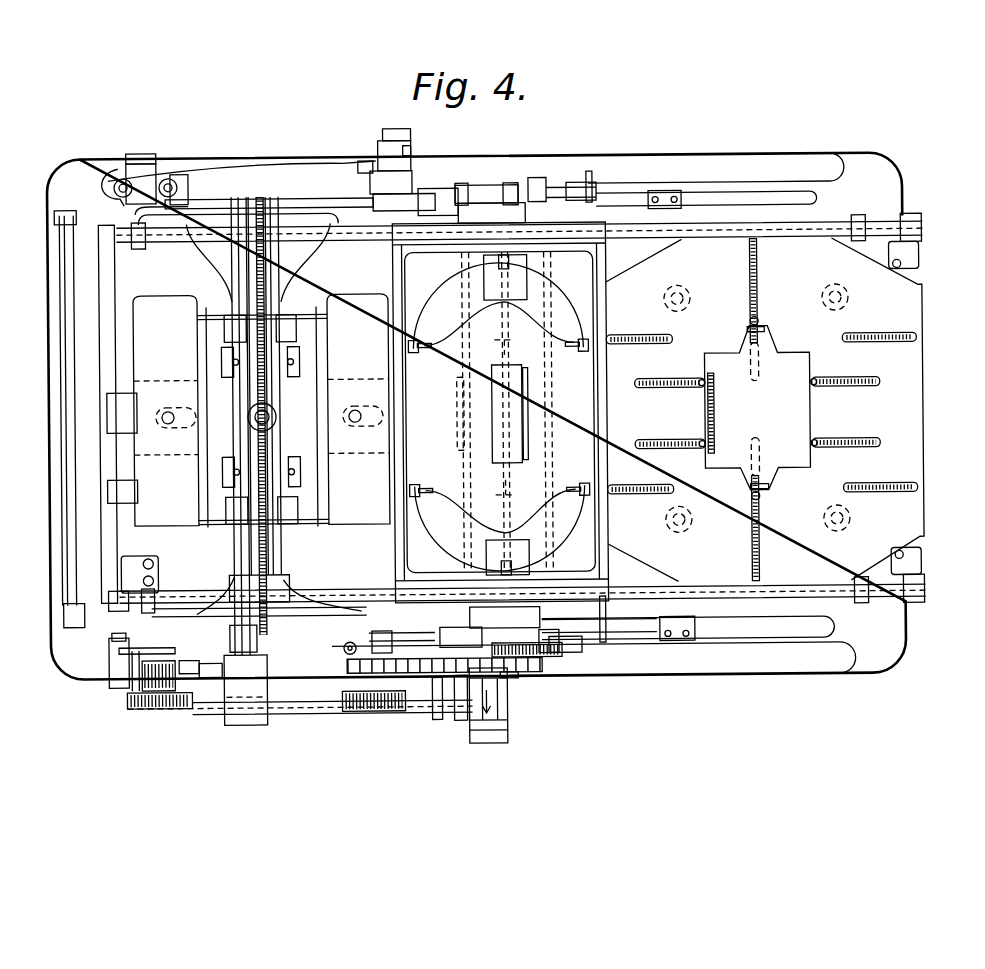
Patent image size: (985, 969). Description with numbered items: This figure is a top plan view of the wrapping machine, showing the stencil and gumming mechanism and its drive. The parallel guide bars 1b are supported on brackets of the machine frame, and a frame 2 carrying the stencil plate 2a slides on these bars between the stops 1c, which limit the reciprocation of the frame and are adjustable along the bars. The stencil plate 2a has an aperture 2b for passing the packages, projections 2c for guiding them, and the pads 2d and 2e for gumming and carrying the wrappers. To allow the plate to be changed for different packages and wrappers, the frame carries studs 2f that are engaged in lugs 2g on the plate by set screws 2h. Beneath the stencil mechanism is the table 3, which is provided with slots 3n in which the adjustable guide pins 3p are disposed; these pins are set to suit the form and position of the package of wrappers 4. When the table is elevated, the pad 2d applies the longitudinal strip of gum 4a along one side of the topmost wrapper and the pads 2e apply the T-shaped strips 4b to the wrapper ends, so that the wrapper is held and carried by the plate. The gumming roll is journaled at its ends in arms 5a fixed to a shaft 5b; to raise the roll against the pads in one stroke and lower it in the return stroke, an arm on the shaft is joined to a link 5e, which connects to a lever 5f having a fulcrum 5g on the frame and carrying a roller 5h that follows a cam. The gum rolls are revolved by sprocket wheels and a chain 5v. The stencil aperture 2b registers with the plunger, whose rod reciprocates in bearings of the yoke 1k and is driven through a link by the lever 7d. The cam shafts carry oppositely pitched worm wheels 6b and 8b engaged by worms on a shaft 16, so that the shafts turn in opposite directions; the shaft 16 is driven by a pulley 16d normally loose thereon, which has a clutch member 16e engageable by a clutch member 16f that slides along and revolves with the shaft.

The parallel guide bars 1b is at (745, 232).
The stops 1c is at (137, 223).
The yoke 1k is at (250, 275).
The frame 2 is at (605, 241).
The stencil plate 2a is at (577, 415).
The aperture 2b is at (563, 411).
The projections 2c is at (493, 460).
The pad 2d is at (455, 387).
The pads 2e is at (500, 345).
The studs 2f is at (568, 510).
The lugs 2g is at (413, 343).
The set screws 2h is at (410, 347).
The table 3 is at (907, 410).
The slots 3n is at (642, 487).
The adjustable guide pins 3p is at (758, 323).
The package of wrappers 4 is at (803, 415).
The longitudinal strip of gum 4a is at (715, 422).
The T-shaped strips 4b is at (750, 329).
The arms 5a is at (488, 195).
The shaft 5b is at (467, 297).
The link 5e is at (415, 182).
The lever 5f is at (372, 165).
The fulcrum 5g is at (418, 180).
The roller 5h is at (400, 160).
The chain 5v is at (508, 672).
The worm wheel 6b is at (360, 713).
The lever 7d is at (238, 550).
The worm wheel 8b is at (150, 708).
The shaft 16 is at (300, 712).
The pulley 16d is at (482, 740).
The clutch member 16e is at (457, 715).
The clutch member 16f is at (438, 715).